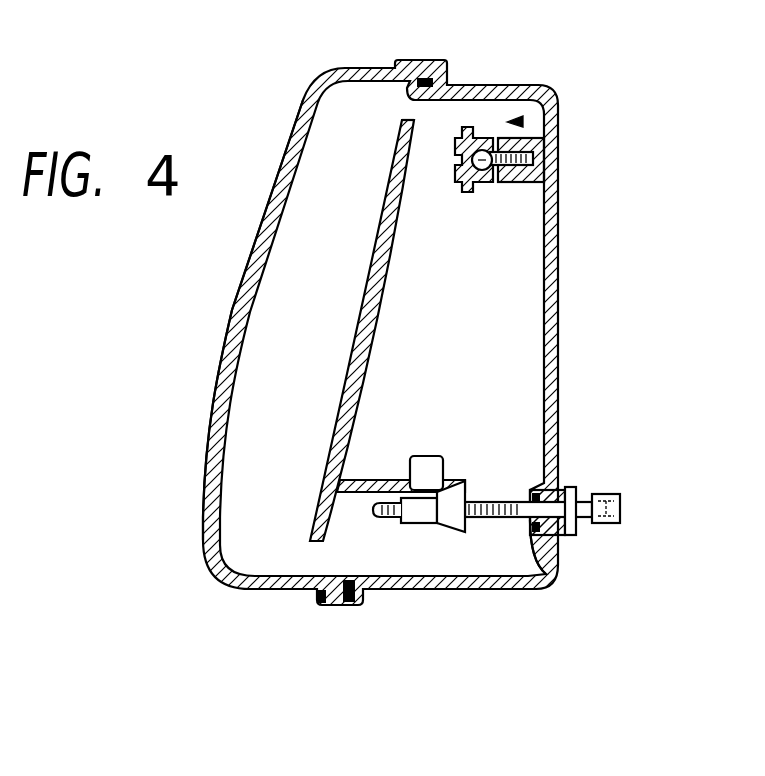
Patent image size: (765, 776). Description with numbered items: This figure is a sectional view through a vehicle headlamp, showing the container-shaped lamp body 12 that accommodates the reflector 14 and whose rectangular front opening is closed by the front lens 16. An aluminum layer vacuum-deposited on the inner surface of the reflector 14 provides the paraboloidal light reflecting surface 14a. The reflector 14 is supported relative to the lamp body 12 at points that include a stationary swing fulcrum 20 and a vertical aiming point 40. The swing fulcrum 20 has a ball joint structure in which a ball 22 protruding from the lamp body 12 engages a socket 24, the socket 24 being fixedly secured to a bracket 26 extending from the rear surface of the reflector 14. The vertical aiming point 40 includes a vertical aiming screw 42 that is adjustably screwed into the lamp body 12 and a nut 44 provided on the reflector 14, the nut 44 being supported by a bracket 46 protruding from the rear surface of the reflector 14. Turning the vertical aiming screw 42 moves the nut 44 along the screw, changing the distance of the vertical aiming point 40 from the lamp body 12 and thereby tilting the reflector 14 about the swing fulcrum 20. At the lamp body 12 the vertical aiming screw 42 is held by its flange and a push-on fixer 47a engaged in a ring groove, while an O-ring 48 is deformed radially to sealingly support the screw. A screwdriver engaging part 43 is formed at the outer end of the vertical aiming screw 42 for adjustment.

The lamp body 12 is at (560, 272).
The reflector 14 is at (376, 343).
The light reflecting surface 14a is at (399, 147).
The front lens 16 is at (230, 333).
The swing fulcrum 20 is at (523, 121).
The ball 22 is at (478, 170).
The socket 24 is at (490, 138).
The bracket 26 is at (468, 126).
The vertical aiming point 40 is at (405, 540).
The vertical aiming screw 42 is at (497, 518).
The screwdriver engaging part 43 is at (609, 490).
The nut 44 is at (451, 523).
The bracket 46 is at (382, 480).
The push-on fixer 47a is at (563, 566).
The O-ring 48 is at (575, 534).